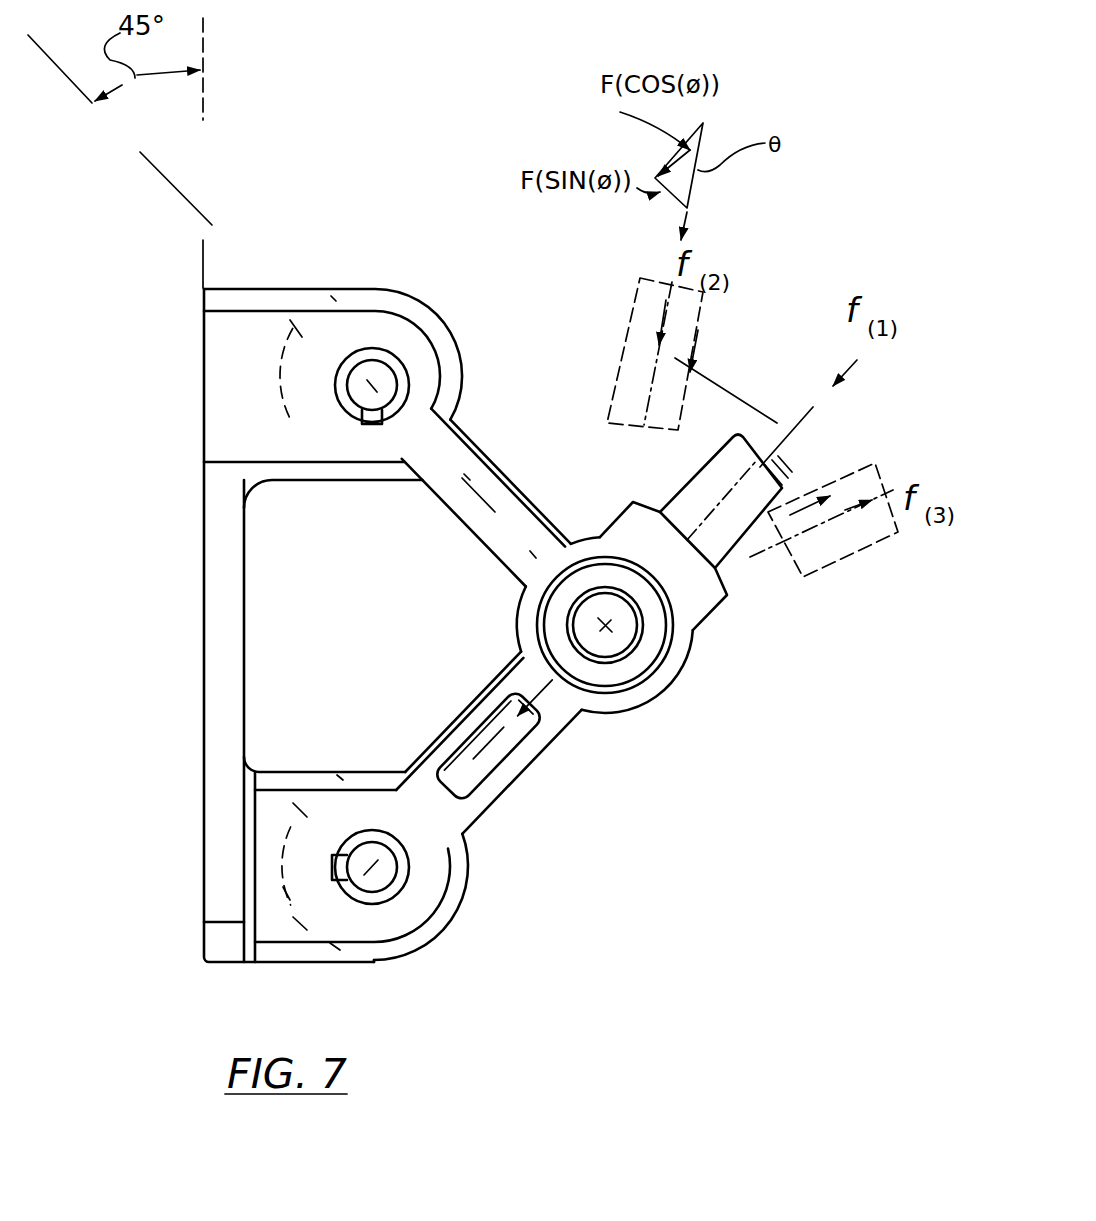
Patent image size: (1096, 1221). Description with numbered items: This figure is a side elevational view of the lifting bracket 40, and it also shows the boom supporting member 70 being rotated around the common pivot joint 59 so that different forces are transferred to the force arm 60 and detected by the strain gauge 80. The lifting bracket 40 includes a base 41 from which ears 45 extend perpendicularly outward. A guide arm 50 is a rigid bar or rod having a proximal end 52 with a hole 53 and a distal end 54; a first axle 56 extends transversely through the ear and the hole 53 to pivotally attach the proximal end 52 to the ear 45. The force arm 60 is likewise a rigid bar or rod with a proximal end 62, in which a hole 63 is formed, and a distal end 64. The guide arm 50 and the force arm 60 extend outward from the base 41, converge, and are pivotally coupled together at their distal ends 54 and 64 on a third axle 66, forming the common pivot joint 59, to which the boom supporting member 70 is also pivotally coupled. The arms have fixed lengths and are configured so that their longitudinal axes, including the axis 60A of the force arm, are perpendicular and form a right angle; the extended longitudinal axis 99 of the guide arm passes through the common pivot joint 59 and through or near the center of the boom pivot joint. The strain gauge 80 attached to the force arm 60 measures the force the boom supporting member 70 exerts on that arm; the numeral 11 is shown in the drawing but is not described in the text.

The direction indicator 11 is at (835, 108).
The lifting bracket 40 is at (432, 183).
The base 41 is at (200, 338).
The ear 45 is at (465, 377).
The guide arm 50 is at (502, 474).
The proximal end 52 is at (460, 898).
The hole 53 is at (396, 890).
The distal end 54 is at (359, 848).
The first axle 56 is at (388, 362).
The common pivot joint 59 is at (612, 630).
The force arm 60 is at (545, 753).
The longitudinal axis 60A is at (480, 740).
The proximal end 62 is at (284, 858).
The hole 63 is at (337, 873).
The distal end 64 is at (692, 651).
The third axle 66 is at (585, 620).
The boom supporting member 70 is at (640, 284).
The strain gauge 80 is at (495, 778).
The extended longitudinal axis 99 is at (476, 490).